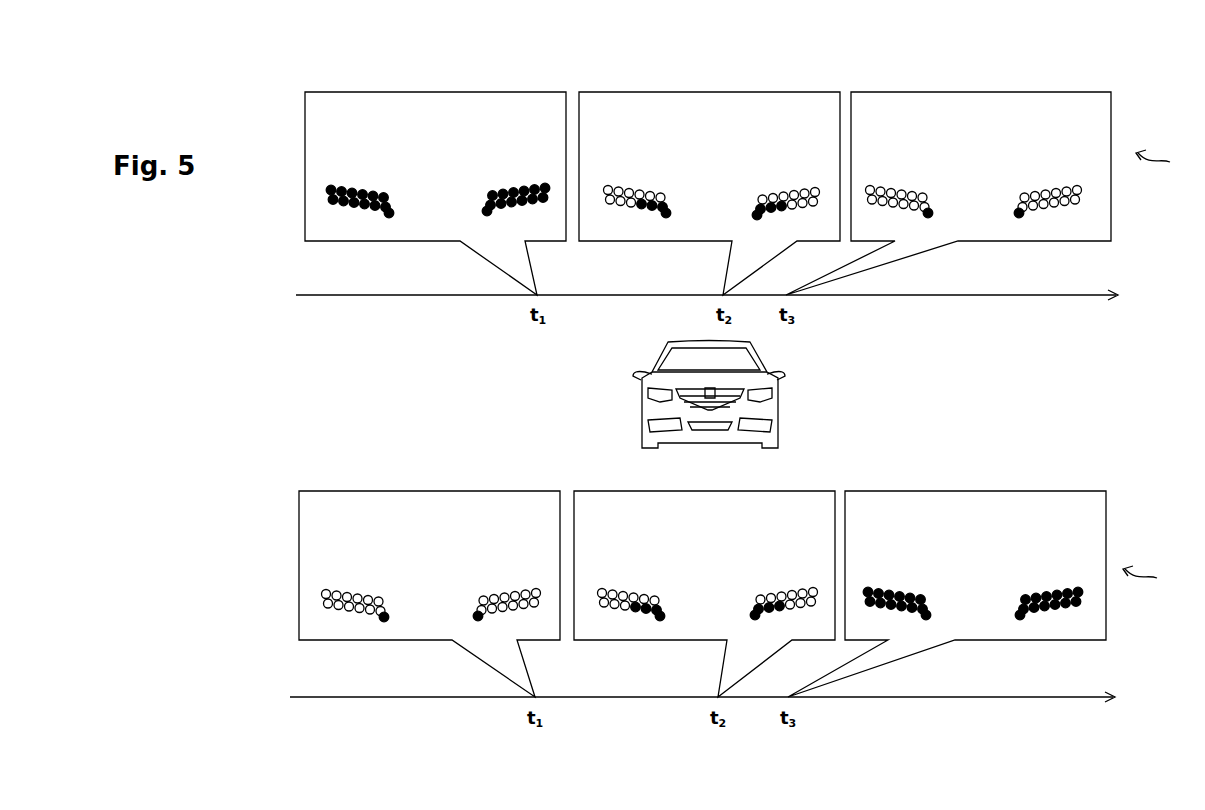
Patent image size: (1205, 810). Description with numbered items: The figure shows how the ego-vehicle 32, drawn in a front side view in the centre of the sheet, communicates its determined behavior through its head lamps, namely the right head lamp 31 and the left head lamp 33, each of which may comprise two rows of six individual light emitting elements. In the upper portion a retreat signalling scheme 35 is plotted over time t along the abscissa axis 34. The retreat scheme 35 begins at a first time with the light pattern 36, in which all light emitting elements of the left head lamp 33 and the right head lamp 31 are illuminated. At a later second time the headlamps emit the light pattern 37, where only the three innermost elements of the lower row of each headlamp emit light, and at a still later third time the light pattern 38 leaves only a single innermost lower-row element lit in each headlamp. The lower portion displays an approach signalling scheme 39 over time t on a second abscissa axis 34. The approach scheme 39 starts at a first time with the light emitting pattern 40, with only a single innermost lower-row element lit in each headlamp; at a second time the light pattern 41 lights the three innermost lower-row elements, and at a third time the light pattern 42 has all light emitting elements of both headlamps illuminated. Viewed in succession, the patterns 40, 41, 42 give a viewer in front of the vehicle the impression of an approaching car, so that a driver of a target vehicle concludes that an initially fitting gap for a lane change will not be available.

The right head lamp 31 is at (777, 391).
The vehicle 32 is at (660, 353).
The left head lamp 33 is at (647, 393).
The time axis 34 is at (1050, 296).
The retreat signalling scheme 35 is at (1165, 161).
The light pattern 36 is at (551, 92).
The light pattern 37 is at (801, 92).
The light pattern 38 is at (1020, 92).
The approach signalling scheme 39 is at (1152, 577).
The light emitting pattern 40 is at (512, 491).
The light pattern 41 is at (810, 491).
The light pattern 42 is at (981, 491).